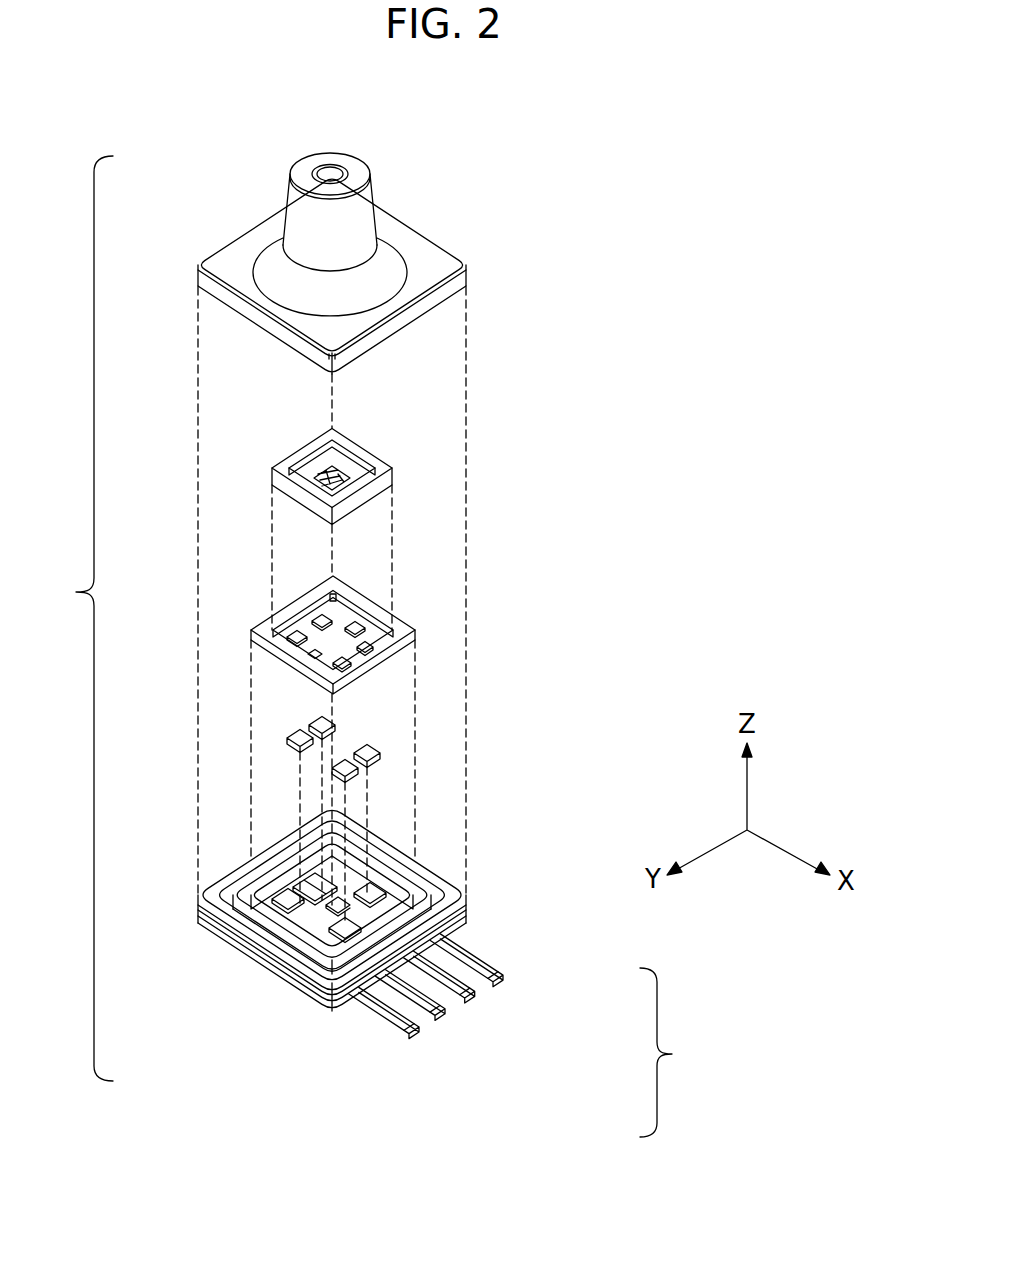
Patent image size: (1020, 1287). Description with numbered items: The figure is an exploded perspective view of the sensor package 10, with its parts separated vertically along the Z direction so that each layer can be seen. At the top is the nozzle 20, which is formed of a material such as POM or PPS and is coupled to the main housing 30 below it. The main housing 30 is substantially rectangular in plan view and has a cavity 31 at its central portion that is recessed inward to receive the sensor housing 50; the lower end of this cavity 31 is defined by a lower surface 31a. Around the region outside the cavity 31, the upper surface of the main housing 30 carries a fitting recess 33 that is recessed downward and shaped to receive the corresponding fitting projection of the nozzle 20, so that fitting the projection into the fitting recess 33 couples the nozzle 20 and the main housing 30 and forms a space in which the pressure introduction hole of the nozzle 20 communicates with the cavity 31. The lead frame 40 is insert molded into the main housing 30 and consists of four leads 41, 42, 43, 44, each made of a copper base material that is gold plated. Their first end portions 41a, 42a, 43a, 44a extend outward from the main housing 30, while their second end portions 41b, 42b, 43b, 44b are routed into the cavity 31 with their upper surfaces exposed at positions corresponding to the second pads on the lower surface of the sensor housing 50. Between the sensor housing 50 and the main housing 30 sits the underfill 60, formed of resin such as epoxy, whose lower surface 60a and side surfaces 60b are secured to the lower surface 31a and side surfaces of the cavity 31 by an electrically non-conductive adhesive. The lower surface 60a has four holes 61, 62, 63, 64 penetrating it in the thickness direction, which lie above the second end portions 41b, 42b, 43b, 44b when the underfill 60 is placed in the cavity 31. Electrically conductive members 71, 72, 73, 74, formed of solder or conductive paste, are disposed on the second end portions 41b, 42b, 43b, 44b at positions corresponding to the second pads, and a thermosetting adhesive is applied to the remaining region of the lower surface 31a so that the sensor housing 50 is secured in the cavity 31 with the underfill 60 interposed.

The sensor package 10 is at (76, 592).
The nozzle 20 is at (423, 255).
The main housing 30 is at (339, 916).
The cavity 31 is at (307, 932).
The lower surface 31a is at (357, 898).
The fitting recess 33 is at (227, 888).
The lead frame 40 is at (531, 1035).
The lead 41 is at (527, 970).
The first end portion 41a is at (507, 975).
The second end portion 41b is at (322, 883).
The lead 42 is at (514, 998).
The first end portion 42a is at (480, 992).
The second end portion 42b is at (367, 916).
The lead 43 is at (500, 1028).
The first end portion 43a is at (450, 1009).
The second end portion 43b is at (350, 937).
The lead 44 is at (490, 1058).
The first end portion 44a is at (425, 1027).
The second end portion 44b is at (287, 907).
The sensor housing 50 is at (368, 460).
The underfill 60 is at (344, 627).
The lower surface 60a is at (343, 622).
The side surfaces 60b is at (372, 556).
The hole 61 is at (322, 617).
The hole 62 is at (368, 650).
The hole 63 is at (345, 667).
The hole 64 is at (298, 632).
The electrically conductive member 71 is at (318, 722).
The electrically conductive member 72 is at (378, 752).
The electrically conductive member 73 is at (353, 776).
The electrically conductive member 74 is at (297, 736).